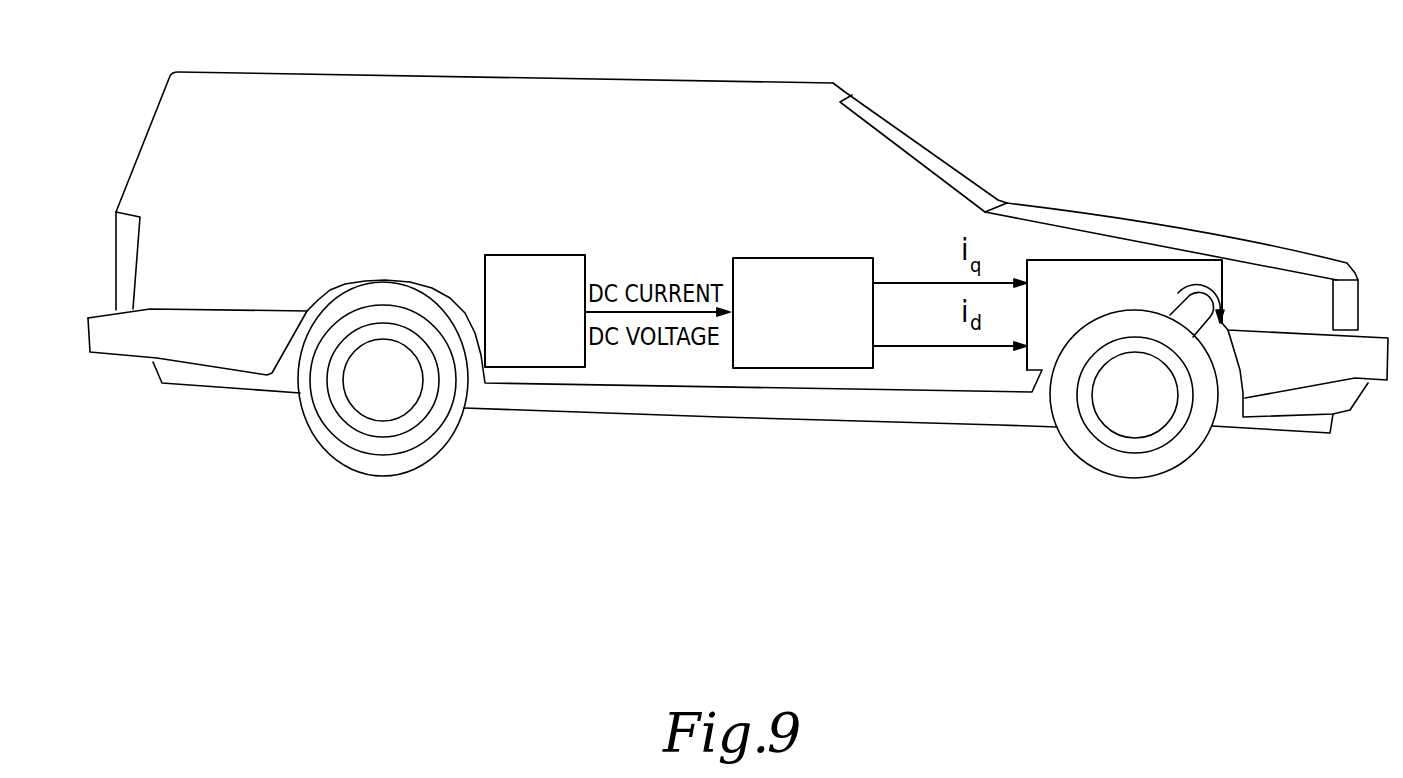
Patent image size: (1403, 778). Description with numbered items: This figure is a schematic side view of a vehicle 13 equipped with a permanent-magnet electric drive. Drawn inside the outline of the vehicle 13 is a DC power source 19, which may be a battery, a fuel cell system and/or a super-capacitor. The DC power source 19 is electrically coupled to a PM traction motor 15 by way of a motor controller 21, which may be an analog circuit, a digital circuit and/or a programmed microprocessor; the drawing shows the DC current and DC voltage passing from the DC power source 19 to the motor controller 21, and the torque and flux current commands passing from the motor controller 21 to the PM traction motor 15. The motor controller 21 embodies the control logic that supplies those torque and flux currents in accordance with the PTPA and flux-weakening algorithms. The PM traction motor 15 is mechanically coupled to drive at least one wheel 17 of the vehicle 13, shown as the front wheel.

The vehicle 13 is at (505, 77).
The PM traction motor 15 is at (1155, 260).
The wheel 17 is at (1197, 453).
The DC power source 19 is at (537, 255).
The motor controller 21 is at (803, 258).